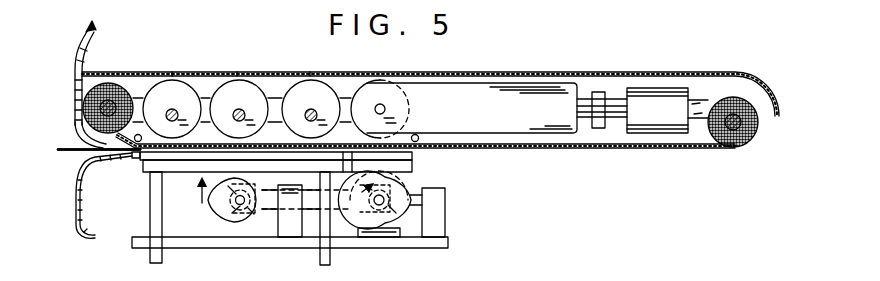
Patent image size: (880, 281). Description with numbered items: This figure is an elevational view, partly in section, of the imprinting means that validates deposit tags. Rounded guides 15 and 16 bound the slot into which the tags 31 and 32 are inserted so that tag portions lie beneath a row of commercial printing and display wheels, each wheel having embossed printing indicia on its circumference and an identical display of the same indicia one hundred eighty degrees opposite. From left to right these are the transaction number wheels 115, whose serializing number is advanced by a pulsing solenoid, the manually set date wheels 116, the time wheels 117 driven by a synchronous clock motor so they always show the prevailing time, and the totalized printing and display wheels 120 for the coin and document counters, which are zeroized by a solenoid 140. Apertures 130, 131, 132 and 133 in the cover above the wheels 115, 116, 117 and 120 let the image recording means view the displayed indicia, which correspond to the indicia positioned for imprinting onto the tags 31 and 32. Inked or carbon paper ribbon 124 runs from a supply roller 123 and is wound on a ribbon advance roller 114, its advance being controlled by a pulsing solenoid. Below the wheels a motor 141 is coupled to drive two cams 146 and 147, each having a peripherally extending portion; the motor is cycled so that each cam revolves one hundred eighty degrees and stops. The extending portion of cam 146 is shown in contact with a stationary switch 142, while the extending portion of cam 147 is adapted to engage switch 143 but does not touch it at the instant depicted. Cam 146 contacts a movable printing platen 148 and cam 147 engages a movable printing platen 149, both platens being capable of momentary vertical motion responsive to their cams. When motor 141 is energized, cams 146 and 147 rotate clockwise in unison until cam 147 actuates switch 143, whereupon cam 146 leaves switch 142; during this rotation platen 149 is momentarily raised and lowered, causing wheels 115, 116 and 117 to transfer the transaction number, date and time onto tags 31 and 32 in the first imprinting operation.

The rounded guide 15 is at (77, 96).
The rounded guide 16 is at (75, 195).
The tag 31 is at (70, 133).
The tag 32 is at (72, 147).
The ribbon advance roller 114 is at (107, 84).
The transaction number printing and display wheels 115 is at (183, 102).
The date printing and display wheels 116 is at (250, 102).
The time indicia wheels 117 is at (322, 102).
The totalized printing and display wheels 120 is at (388, 86).
The supply roller 123 is at (750, 146).
The carbon paper or ribbon 124 is at (552, 148).
The aperture 130 is at (173, 78).
The aperture 131 is at (238, 78).
The aperture 132 is at (311, 78).
The aperture 133 is at (381, 78).
The solenoid 140 is at (652, 89).
The motor 141 is at (355, 230).
The stationary switch 142 is at (446, 210).
The switch 143 is at (293, 237).
The cam 146 is at (401, 234).
The cam 147 is at (224, 206).
The movable printing platen 148 is at (412, 163).
The movable printing platen 149 is at (142, 163).